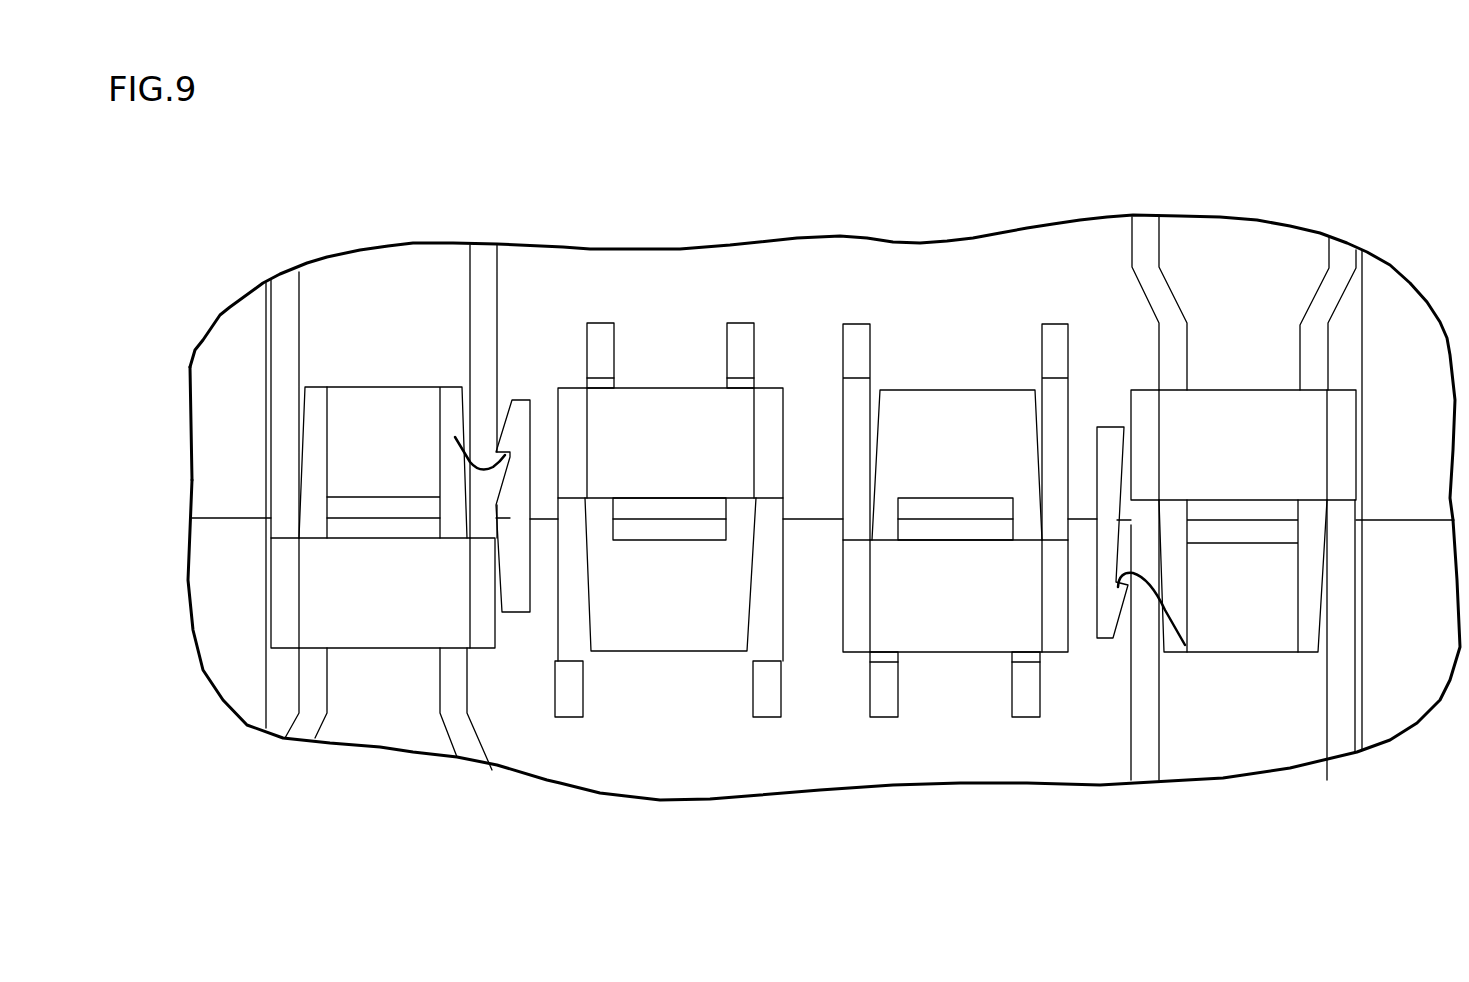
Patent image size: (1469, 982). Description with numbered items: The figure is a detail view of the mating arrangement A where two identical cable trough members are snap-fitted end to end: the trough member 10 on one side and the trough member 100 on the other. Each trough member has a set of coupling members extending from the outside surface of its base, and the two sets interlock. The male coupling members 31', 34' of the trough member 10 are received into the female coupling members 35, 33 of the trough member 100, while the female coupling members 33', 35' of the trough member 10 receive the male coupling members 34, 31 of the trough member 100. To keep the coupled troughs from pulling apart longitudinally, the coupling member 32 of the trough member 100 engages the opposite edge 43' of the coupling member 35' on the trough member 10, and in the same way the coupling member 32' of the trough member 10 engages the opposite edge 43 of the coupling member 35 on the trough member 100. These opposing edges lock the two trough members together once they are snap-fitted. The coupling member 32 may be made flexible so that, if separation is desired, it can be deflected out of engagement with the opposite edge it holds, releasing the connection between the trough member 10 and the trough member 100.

The trough member 10 is at (802, 265).
The trough member 100 is at (815, 773).
The mating arrangement of the trough assembly A is at (403, 212).
The coupling member 31 is at (398, 391).
The coupling member 31' is at (1229, 640).
The coupling member 32 is at (526, 459).
The coupling member 32' is at (1096, 589).
The coupling member 33 is at (669, 520).
The coupling member 33' is at (955, 628).
The coupling member 34 is at (955, 432).
The coupling member 34' is at (670, 574).
The coupling member 35 is at (1246, 483).
The coupling member 35' is at (380, 525).
The opposite edge 43 is at (1171, 643).
The opposite edge 43' is at (441, 396).